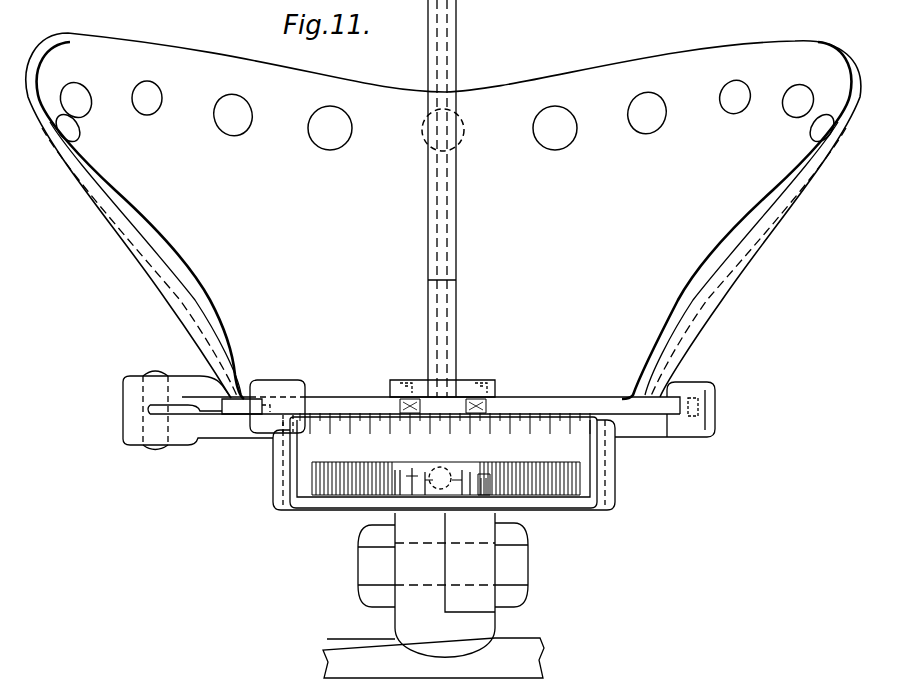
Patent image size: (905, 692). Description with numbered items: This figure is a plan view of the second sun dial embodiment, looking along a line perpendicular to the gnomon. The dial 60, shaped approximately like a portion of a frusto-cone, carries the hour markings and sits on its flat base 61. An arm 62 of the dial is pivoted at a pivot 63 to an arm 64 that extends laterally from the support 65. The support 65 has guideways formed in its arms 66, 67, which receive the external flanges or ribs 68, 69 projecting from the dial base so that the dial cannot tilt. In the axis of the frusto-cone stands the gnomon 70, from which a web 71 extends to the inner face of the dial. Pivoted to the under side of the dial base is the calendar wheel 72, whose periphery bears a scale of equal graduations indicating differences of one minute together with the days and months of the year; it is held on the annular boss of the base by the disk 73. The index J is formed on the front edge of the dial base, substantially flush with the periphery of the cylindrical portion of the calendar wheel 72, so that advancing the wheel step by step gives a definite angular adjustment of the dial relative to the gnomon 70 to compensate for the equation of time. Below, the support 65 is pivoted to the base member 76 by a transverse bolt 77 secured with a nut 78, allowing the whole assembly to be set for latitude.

The dial 60 is at (514, 102).
The flat base 61 is at (547, 404).
The arm 62 is at (183, 378).
The pivot 63 is at (153, 373).
The arm 64 is at (200, 436).
The support 65 is at (275, 487).
The arm 66 is at (710, 386).
The arm 67 is at (288, 387).
The external flange 68 is at (663, 406).
The external flange 69 is at (240, 413).
The gnomon 70 is at (457, 218).
The web 71 is at (447, 243).
The calendar wheel 72 is at (565, 423).
The disk 73 is at (377, 490).
The base member 76 is at (397, 650).
The transverse bolt 77 is at (485, 528).
The nut 78 is at (383, 572).
The index J is at (441, 411).